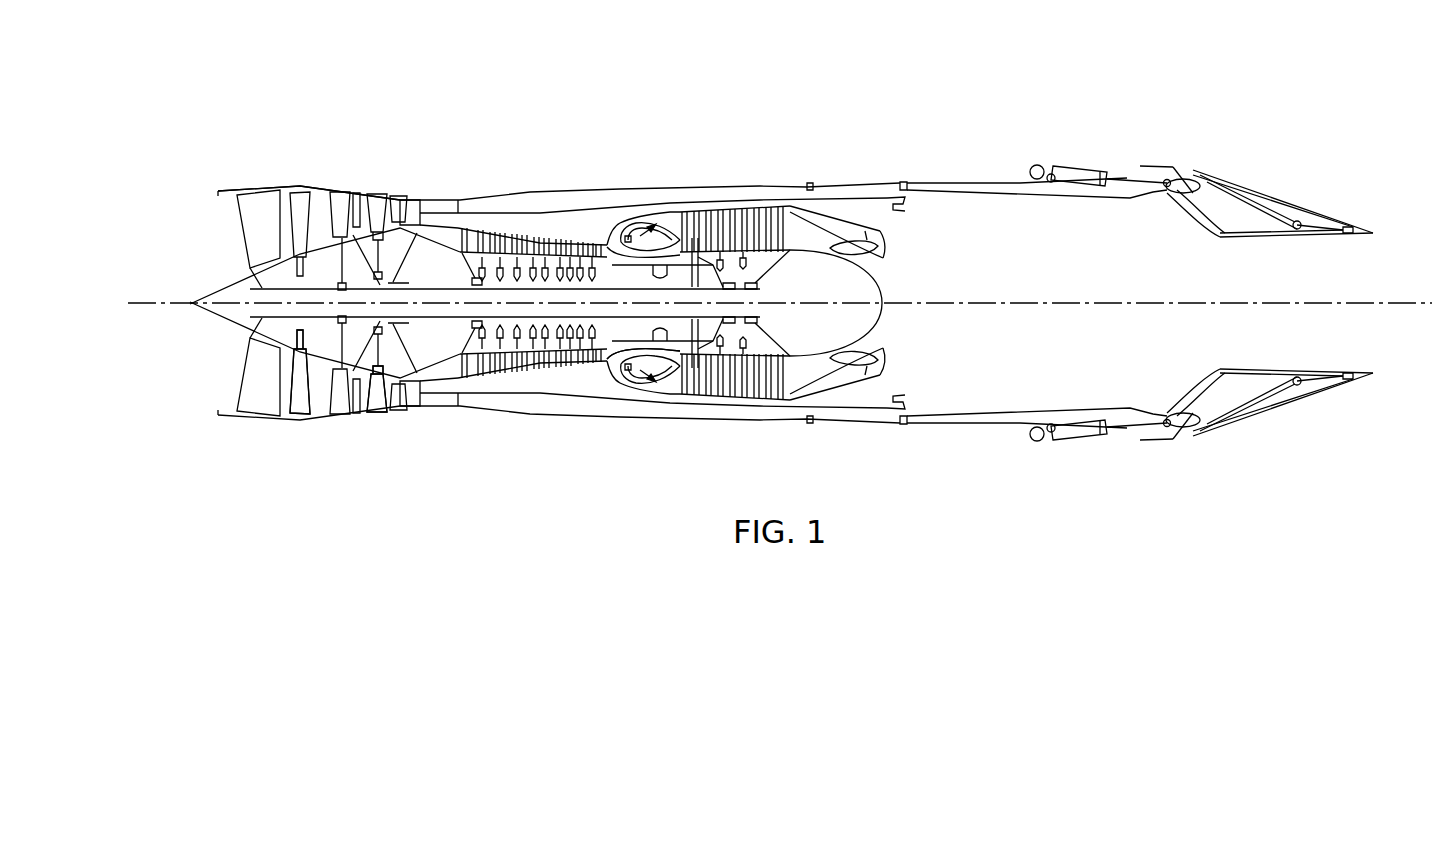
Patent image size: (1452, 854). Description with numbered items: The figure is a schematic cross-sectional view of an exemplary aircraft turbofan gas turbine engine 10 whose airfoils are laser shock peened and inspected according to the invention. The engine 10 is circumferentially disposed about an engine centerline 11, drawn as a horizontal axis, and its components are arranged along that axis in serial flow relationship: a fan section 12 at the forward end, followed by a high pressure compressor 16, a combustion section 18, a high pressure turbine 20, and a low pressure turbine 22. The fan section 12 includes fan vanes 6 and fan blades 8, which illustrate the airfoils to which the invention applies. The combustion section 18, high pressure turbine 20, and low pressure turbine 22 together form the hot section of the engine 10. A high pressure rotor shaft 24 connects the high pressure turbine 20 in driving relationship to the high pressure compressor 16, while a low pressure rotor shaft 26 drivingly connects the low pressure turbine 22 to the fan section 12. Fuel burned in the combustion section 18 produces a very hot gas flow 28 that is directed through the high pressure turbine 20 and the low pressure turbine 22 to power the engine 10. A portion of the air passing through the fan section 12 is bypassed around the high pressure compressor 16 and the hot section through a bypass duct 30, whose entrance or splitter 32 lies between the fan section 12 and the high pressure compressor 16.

The fan vanes 6 is at (241, 232).
The fan blades 8 is at (298, 413).
The aircraft turbofan gas turbine engine 10 is at (531, 435).
The engine centerline 11 is at (128, 303).
The fan section 12 is at (322, 131).
The high pressure compressor 16 is at (517, 245).
The combustion section 18 is at (621, 217).
The high pressure turbine 20 is at (692, 213).
The low pressure turbine 22 is at (734, 210).
The high pressure rotor shaft 24 is at (662, 266).
The low pressure rotor shaft 26 is at (655, 348).
The hot gas flow 28 is at (646, 222).
The bypass duct 30 is at (530, 203).
The splitter 32 is at (421, 200).